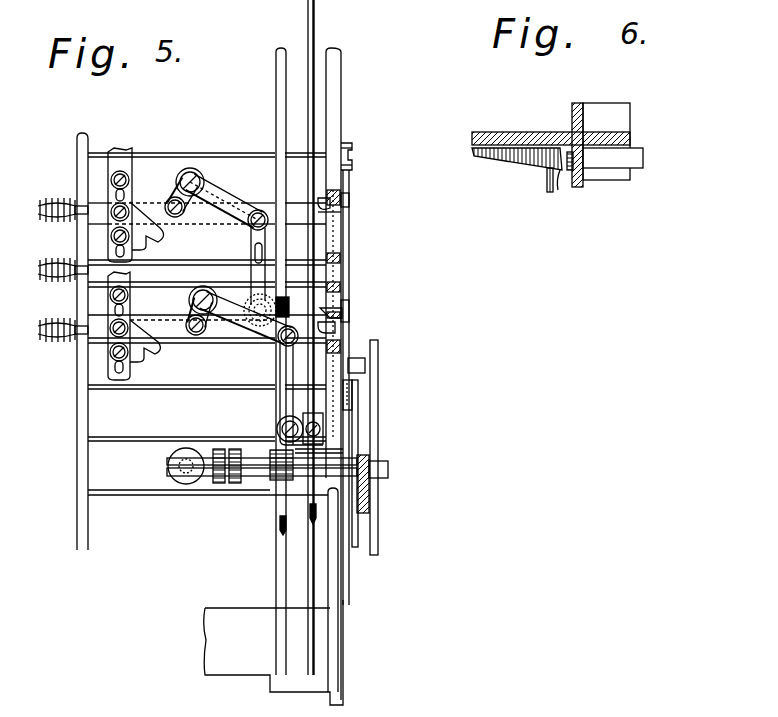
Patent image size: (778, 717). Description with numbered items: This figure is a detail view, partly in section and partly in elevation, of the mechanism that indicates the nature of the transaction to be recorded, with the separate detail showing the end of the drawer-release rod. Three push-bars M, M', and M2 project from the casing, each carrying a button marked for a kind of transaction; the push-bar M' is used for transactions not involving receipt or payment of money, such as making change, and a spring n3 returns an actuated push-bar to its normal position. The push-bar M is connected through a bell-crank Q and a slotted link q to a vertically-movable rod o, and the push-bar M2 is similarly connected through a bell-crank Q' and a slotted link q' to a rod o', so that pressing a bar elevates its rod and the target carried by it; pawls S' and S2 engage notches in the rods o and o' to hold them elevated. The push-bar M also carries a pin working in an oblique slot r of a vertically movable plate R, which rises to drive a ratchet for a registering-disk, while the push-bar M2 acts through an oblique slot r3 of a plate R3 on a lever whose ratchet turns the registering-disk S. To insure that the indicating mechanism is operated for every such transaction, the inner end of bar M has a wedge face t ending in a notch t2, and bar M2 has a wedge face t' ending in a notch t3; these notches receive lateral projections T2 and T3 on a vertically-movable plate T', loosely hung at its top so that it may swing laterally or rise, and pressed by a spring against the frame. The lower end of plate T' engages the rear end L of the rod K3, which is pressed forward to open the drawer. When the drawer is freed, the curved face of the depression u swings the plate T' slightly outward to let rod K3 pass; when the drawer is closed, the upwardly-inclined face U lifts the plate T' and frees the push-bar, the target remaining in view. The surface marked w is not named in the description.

In FIG. 5, the spring n3 is at (50, 210).
In FIG. 5, the vertically movable plate or bar R is at (128, 152).
In FIG. 5, the oblique slot r is at (140, 208).
In FIG. 5, the vertically-movable bar or plate R3 is at (134, 326).
In FIG. 5, the oblique slot r3 is at (155, 348).
In FIG. 5, the push-bar M is at (210, 231).
In FIG. 5, the push-bar M' is at (210, 287).
In FIG. 5, the push-bar M2 is at (182, 333).
In FIG. 5, the bell-crank Q is at (216, 198).
In FIG. 5, the slotted link q is at (244, 248).
In FIG. 5, the slotted link q' is at (260, 298).
In FIG. 5, the bell-crank Q' is at (242, 329).
In FIG. 5, the vertically-movable rod o is at (269, 361).
In FIG. 5, the vertically-movable rod o' is at (315, 374).
In FIG. 5, the inclined or wedge face t is at (347, 196).
In FIG. 5, the lateral projection T2 is at (350, 207).
In FIG. 5, the notch t2 is at (338, 214).
In FIG. 5, the vertically-movable bar or plate T' is at (362, 387).
In FIG. 6, the vertically-movable bar or plate T' is at (561, 192).
In FIG. 5, the notch t3 is at (342, 310).
In FIG. 5, the lateral projection T3 is at (350, 312).
In FIG. 5, the inclined or wedge face t' is at (347, 324).
In FIG. 5, the registering-disk S is at (277, 503).
In FIG. 5, the pawl S' is at (242, 494).
In FIG. 5, the pawl S2 is at (253, 480).
In FIG. 6, the rod K3 is at (625, 152).
In FIG. 6, the inner or rear end of bar K3 L is at (520, 163).
In FIG. 6, the upwardly-inclined face U is at (520, 150).
In FIG. 6, the depression u is at (566, 152).
In FIG. 6, the wedge surface w is at (550, 156).